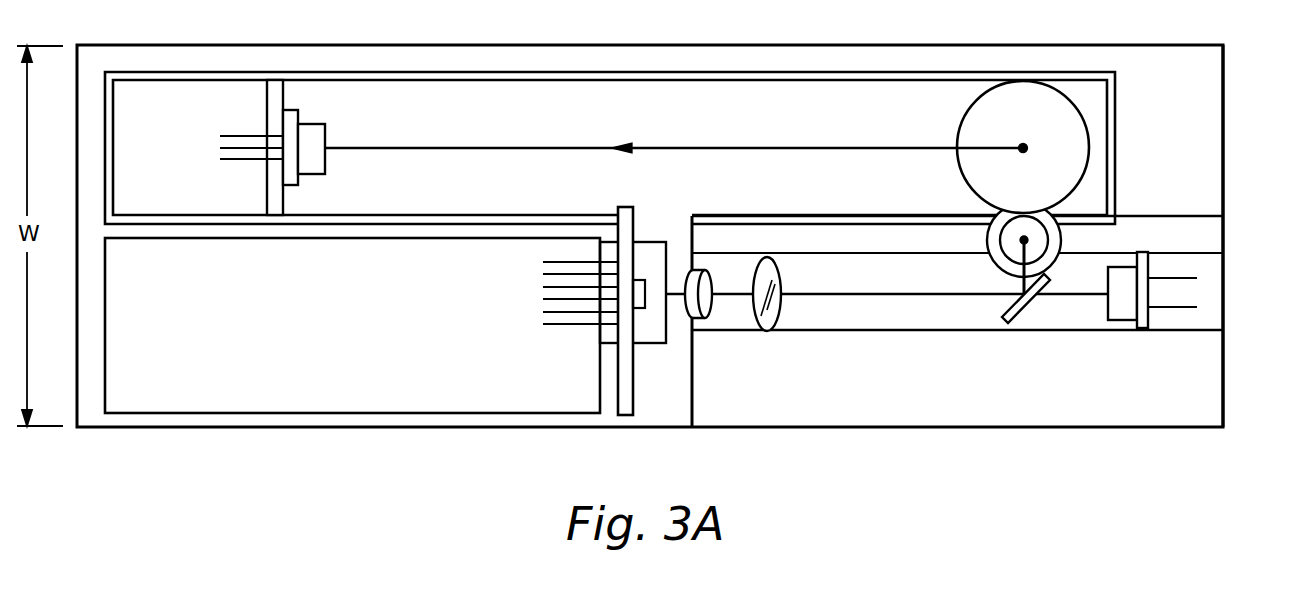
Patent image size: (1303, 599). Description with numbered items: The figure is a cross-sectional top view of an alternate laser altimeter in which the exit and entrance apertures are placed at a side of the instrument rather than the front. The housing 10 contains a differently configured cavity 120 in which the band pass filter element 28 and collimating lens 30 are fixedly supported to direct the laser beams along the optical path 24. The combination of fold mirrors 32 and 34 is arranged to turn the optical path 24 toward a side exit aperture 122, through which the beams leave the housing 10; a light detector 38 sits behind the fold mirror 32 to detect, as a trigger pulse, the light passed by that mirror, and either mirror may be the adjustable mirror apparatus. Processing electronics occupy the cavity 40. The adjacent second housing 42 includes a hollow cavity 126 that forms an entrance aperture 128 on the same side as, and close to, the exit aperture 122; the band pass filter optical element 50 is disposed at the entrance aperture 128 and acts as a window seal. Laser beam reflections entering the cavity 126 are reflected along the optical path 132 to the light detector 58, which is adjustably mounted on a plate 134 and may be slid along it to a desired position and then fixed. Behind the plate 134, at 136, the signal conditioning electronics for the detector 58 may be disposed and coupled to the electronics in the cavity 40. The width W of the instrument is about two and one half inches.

The housing 10 is at (1215, 383).
The optical path 24 is at (886, 296).
The band pass filter element 28 is at (712, 307).
The collimating lens 30 is at (778, 307).
The fold mirror 32 is at (1032, 304).
The fold mirror 34 is at (992, 262).
The light detector 38 is at (1142, 329).
The cavity 40 is at (341, 390).
The second housing 42 is at (1224, 131).
The band pass filter optical element 50 is at (1027, 153).
The light detector 58 is at (327, 138).
The cavity 120 is at (929, 322).
The side exit aperture 122 is at (1068, 243).
The hollow cavity 126 is at (531, 124).
The entrance aperture 128 is at (957, 124).
The optical path 132 is at (741, 148).
The plate 134 is at (277, 86).
The detector electronics location 136 is at (192, 96).